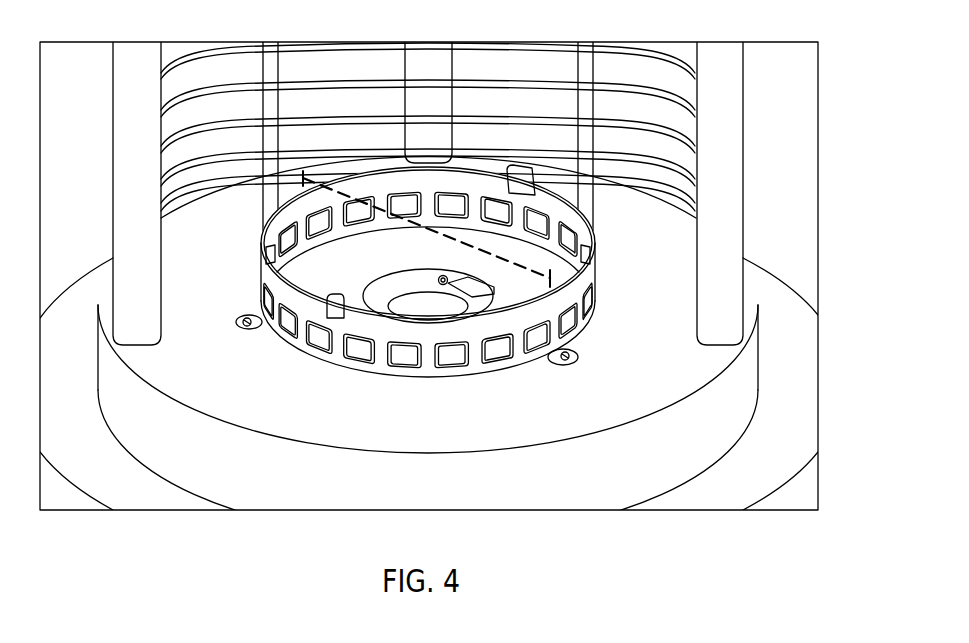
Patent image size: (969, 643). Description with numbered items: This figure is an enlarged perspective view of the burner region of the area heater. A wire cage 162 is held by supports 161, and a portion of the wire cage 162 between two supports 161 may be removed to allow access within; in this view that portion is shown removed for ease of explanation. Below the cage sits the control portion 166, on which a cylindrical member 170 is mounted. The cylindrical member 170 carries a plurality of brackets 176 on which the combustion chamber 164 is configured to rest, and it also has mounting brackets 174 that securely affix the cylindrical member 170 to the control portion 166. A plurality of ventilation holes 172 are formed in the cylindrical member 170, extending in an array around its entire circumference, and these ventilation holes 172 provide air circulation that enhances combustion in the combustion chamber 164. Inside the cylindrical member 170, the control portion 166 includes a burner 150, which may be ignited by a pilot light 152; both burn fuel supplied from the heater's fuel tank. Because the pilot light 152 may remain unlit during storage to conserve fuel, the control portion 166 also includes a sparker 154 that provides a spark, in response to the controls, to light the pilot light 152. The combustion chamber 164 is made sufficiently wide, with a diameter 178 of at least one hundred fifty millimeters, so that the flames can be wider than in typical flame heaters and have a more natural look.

The burner 150 is at (405, 300).
The pilot light 152 is at (443, 276).
The sparker 154 is at (487, 290).
The support 161 is at (127, 118).
The wire cage 162 is at (207, 49).
The combustion chamber 164 is at (343, 66).
The control portion 166 is at (735, 384).
The cylindrical member 170 is at (590, 281).
The ventilation holes 172 is at (568, 322).
The mounting brackets 174 is at (245, 316).
The brackets 176 is at (507, 172).
The diameter 178 is at (520, 264).